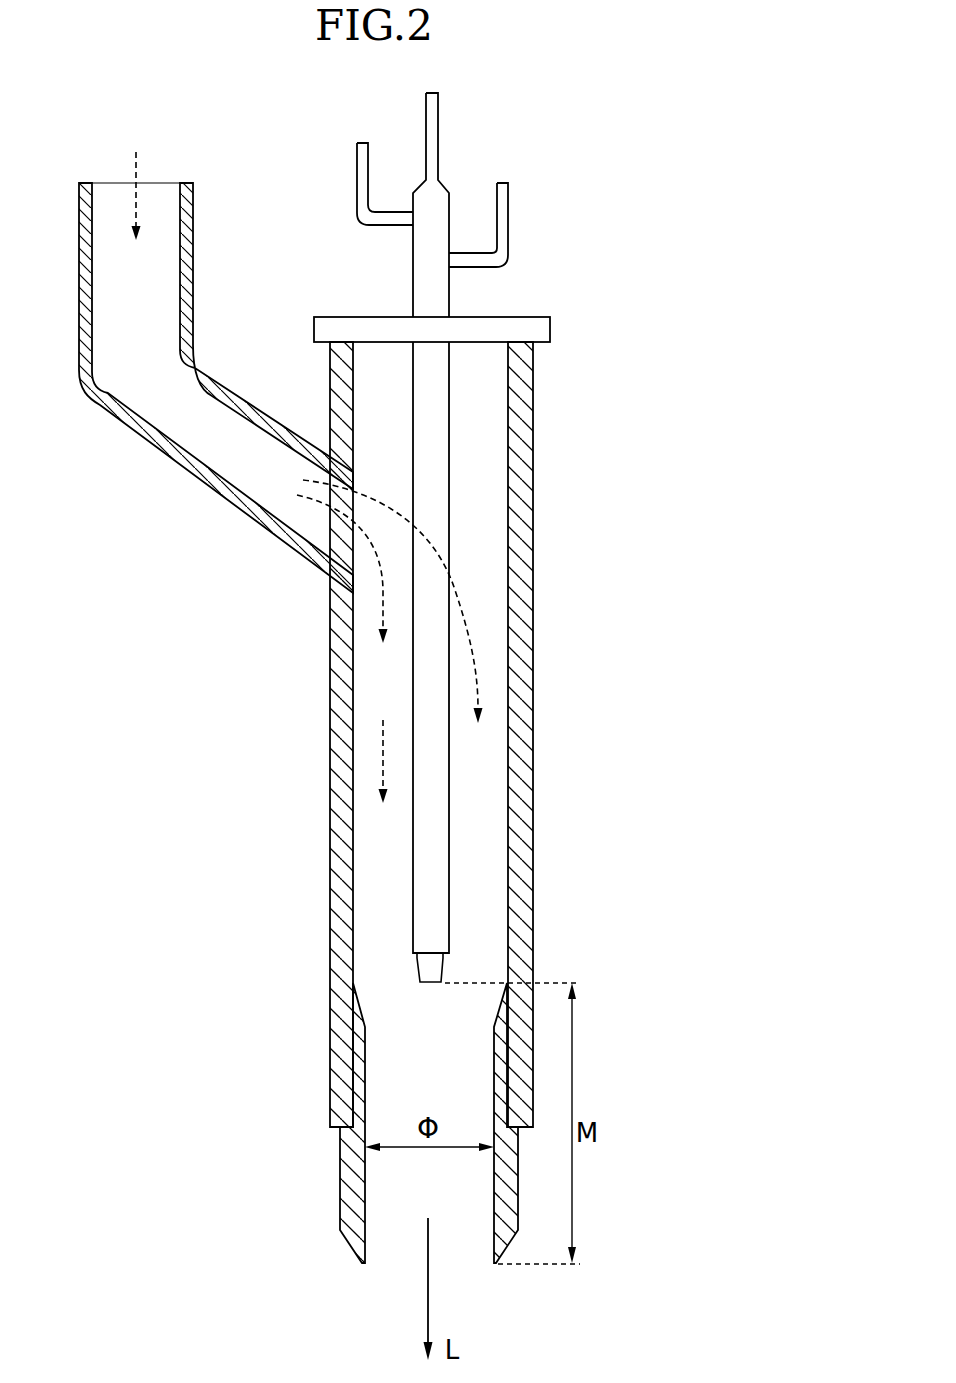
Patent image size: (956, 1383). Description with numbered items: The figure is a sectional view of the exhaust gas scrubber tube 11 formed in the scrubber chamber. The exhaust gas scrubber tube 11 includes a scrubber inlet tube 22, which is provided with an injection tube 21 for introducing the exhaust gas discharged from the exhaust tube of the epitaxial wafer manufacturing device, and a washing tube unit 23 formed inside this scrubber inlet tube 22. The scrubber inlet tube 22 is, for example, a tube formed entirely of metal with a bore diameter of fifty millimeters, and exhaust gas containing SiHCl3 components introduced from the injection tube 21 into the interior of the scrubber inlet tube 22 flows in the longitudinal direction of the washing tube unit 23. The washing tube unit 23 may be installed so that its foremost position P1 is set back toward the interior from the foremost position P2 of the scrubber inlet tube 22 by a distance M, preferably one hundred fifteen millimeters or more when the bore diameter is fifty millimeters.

The exhaust gas scrubber tube 11 is at (588, 492).
The injection tube 21 is at (199, 423).
The scrubber inlet tube 22 is at (520, 723).
The washing tube unit 23 is at (433, 405).
The foremost position of the wash tube unit P1 is at (430, 985).
The foremost position of the scrubber inlet tube P2 is at (398, 1264).